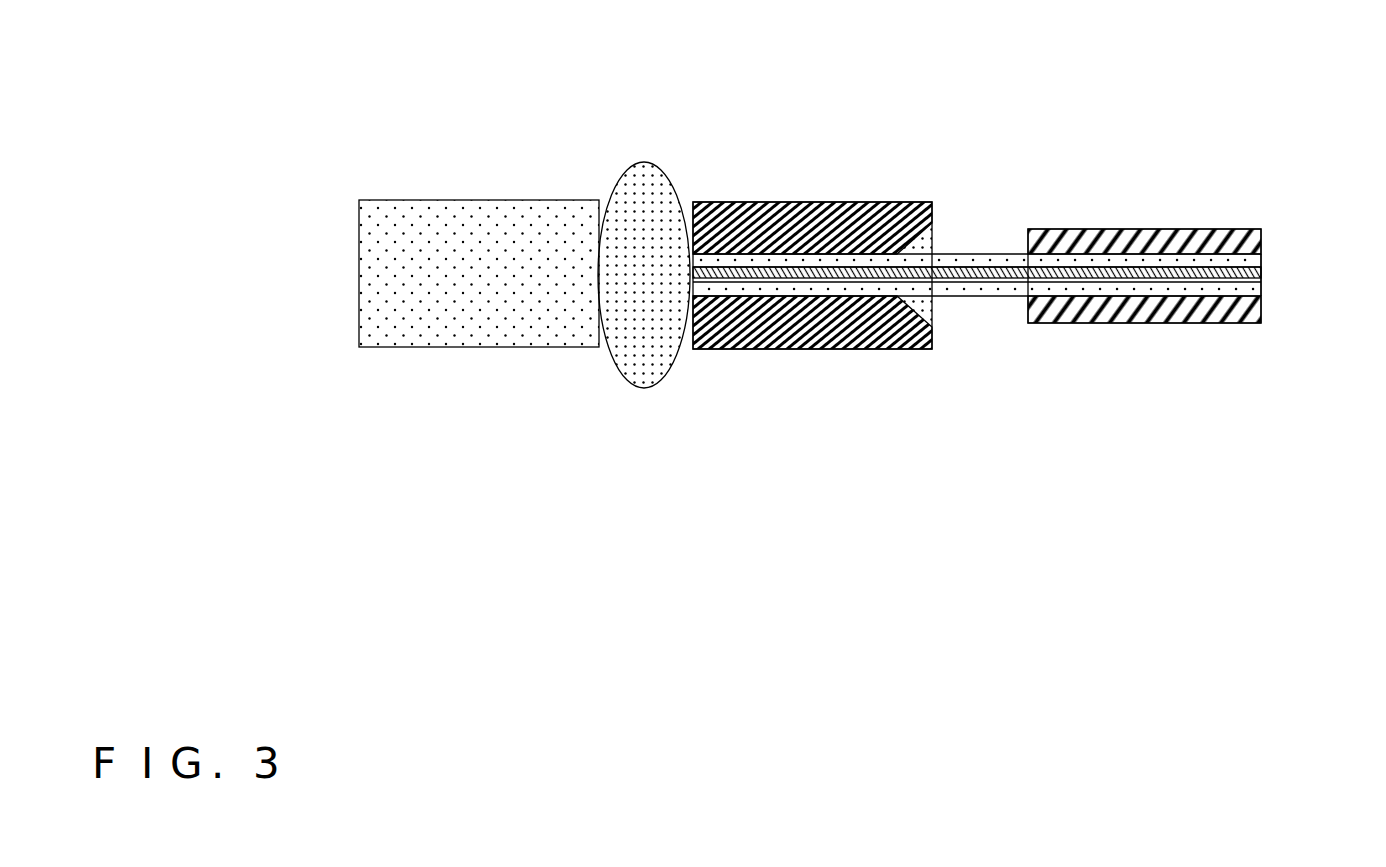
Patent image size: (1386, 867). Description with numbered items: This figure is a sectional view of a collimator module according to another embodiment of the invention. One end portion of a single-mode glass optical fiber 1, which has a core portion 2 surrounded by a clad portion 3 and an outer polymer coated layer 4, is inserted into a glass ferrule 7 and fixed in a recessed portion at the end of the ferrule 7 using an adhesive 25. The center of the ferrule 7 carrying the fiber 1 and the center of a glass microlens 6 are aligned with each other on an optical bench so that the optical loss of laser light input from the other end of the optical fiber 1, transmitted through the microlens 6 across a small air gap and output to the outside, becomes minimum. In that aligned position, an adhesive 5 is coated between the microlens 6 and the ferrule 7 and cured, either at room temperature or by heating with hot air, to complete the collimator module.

The optical fiber 1 is at (1041, 186).
The core portion 2 is at (1262, 277).
The clad portion 3 is at (1262, 260).
The polymer coated layer 4 is at (1132, 240).
The adhesive 5 is at (650, 187).
The glass microlens 6 is at (435, 207).
The glass ferrule 7 is at (793, 200).
The adhesive 25 is at (933, 237).